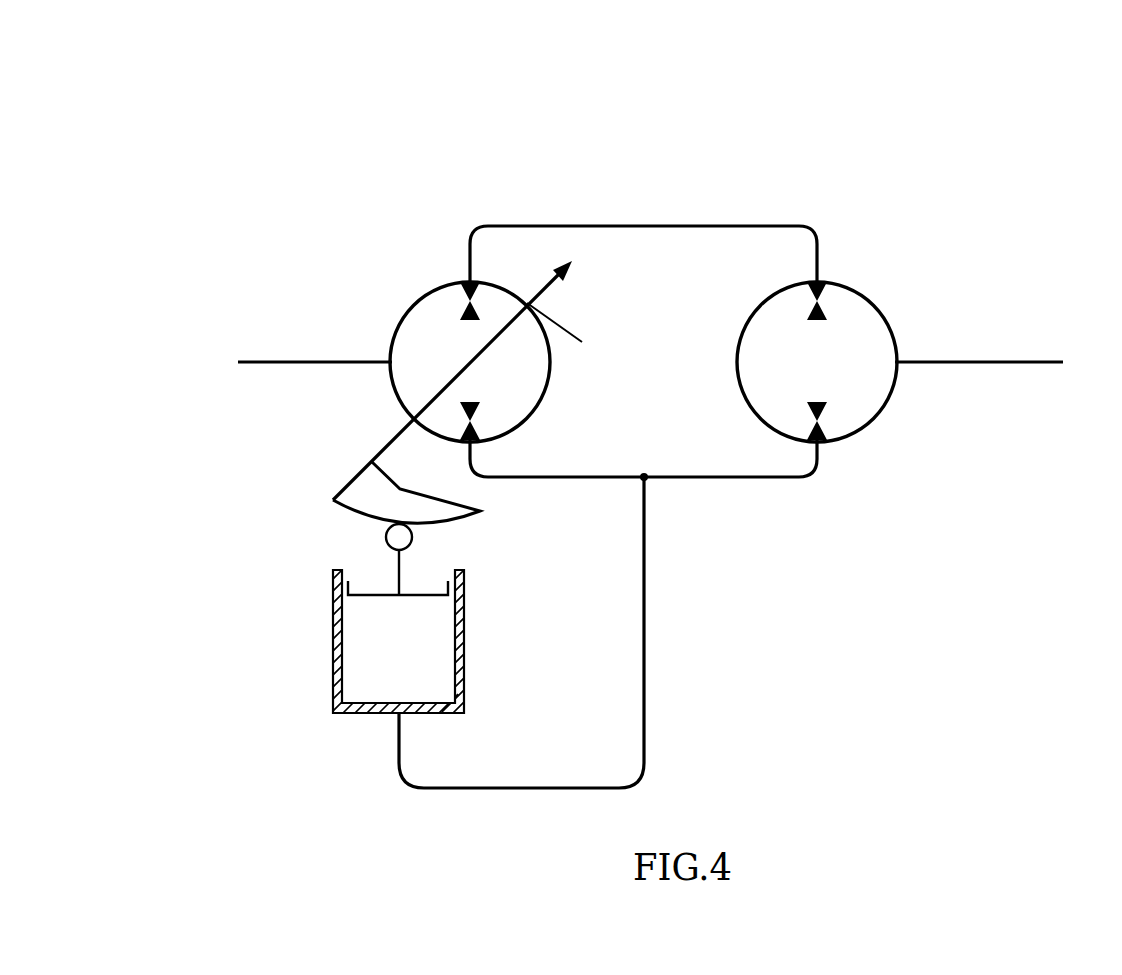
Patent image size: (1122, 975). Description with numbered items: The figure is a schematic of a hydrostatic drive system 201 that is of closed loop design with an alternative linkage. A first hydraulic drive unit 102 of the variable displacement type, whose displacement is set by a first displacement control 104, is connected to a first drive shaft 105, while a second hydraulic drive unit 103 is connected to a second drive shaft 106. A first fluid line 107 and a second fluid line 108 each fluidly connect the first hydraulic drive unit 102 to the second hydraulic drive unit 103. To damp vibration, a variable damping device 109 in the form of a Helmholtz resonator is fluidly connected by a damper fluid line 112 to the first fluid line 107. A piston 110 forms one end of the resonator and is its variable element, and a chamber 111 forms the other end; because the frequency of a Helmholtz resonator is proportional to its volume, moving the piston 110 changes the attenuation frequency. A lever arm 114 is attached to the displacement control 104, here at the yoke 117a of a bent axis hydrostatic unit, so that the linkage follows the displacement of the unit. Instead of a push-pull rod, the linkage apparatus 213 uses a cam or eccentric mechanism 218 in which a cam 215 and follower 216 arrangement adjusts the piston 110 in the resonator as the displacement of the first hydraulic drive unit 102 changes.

The hydrostatic drive system 201 is at (230, 115).
The first hydraulic drive unit 102 is at (403, 318).
The second hydraulic drive unit 103 is at (867, 290).
The first displacement control 104 is at (533, 292).
The first drive shaft 105 is at (307, 361).
The second drive shaft 106 is at (987, 361).
The first fluid line 107 is at (740, 480).
The second fluid line 108 is at (679, 226).
The variable damping device 109 is at (262, 685).
The piston 110 is at (373, 592).
The chamber 111 is at (333, 659).
The damper fluid line 112 is at (646, 681).
The lever arm 114 is at (412, 424).
The yoke 117a is at (412, 423).
The linkage apparatus 213 is at (172, 484).
The cam 215 is at (338, 513).
The follower 216 is at (386, 537).
The cam or eccentric mechanism 218 is at (316, 503).